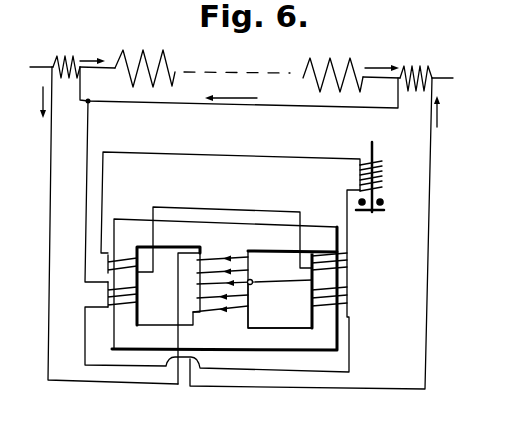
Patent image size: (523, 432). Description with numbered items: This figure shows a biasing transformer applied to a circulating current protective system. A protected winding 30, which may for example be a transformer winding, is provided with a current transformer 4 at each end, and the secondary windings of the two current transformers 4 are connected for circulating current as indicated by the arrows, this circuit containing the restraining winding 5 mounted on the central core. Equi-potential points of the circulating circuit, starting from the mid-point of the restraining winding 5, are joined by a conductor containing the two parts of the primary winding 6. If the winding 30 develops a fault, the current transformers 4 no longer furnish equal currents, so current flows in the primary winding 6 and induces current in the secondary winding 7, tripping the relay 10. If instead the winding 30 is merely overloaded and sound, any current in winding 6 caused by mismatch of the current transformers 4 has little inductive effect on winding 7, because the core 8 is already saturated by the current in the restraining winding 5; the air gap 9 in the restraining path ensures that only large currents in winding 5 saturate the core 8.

The current transformer 4 is at (61, 63).
The winding 30 is at (328, 61).
The relay 10 is at (383, 179).
The core 8 is at (224, 305).
The secondary winding 7 is at (138, 265).
The primary winding 6 is at (138, 296).
The air gap 9 is at (254, 284).
The restraining winding 5 is at (253, 302).